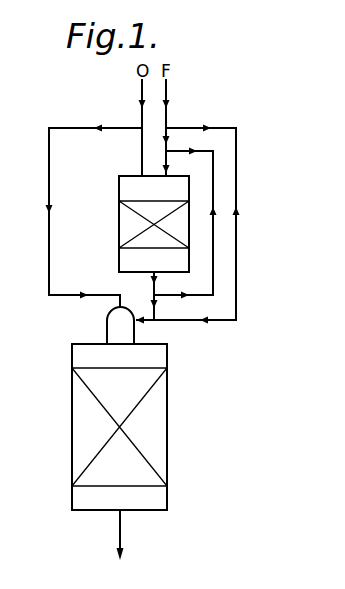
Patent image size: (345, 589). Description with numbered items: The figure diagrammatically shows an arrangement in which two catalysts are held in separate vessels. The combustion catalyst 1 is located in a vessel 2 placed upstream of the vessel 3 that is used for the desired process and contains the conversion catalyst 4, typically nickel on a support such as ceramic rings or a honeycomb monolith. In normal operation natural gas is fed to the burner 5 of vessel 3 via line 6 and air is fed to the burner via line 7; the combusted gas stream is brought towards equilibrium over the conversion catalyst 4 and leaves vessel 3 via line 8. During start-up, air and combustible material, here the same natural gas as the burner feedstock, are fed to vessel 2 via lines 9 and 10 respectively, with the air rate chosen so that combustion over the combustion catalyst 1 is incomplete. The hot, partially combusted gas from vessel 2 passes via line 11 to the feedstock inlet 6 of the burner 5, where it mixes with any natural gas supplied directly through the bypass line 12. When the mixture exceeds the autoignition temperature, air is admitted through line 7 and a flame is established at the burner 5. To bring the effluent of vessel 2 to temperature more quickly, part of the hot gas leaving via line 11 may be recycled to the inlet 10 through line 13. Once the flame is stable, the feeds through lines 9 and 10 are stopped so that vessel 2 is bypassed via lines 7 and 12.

The combustion catalyst 1 is at (126, 227).
The vessel 2 is at (119, 190).
The vessel 3 is at (167, 425).
The conversion catalyst 4 is at (85, 418).
The burner 5 is at (107, 323).
The line 6 is at (140, 321).
The line 7 is at (49, 257).
The line 8 is at (120, 528).
The line 9 is at (142, 153).
The line 10 is at (167, 145).
The line 11 is at (152, 283).
The bypass line 12 is at (236, 257).
The line 13 is at (213, 243).